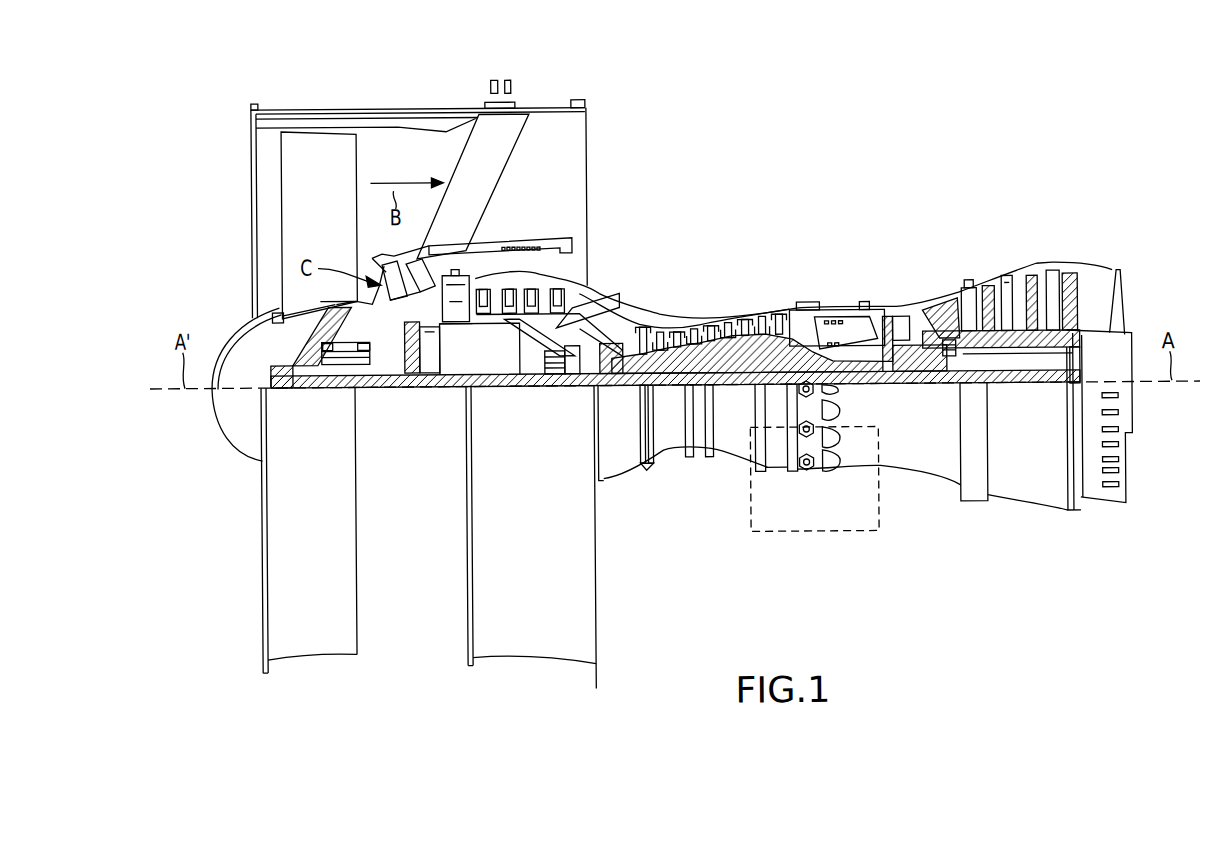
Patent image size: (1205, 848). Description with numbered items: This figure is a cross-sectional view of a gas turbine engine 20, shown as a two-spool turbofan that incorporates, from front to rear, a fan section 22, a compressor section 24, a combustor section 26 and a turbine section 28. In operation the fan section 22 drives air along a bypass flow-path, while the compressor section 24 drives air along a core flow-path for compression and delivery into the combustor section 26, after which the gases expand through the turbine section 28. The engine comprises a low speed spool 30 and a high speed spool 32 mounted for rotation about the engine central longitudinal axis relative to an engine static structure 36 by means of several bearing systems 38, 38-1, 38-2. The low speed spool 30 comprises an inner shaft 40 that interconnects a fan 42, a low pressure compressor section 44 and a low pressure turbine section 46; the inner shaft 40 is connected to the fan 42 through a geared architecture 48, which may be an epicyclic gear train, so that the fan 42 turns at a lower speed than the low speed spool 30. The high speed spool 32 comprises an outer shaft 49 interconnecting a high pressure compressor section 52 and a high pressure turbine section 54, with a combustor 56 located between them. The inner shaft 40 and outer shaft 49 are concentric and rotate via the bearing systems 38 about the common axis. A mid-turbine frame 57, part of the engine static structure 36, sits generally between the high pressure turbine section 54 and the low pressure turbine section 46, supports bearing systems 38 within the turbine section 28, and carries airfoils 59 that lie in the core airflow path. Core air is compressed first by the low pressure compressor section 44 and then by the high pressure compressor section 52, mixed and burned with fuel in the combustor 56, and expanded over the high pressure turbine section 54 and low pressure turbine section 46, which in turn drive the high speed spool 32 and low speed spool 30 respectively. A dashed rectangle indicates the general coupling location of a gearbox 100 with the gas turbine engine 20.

The gas turbine engine 20 is at (880, 132).
The fan section 22 is at (458, 87).
The compressor section 24 is at (470, 209).
The combustor section 26 is at (887, 209).
The turbine section 28 is at (1070, 210).
The low speed spool 30 is at (740, 402).
The high speed spool 32 is at (772, 355).
The engine static structure 36 is at (752, 456).
The bearing system 38 is at (935, 386).
The bearing system 38-1 is at (325, 365).
The bearing system 38-2 is at (553, 386).
The inner shaft 40 is at (613, 393).
The fan 42 is at (329, 221).
The low pressure compressor section 44 is at (530, 292).
The low pressure turbine section 46 is at (1013, 285).
The geared architecture 48 is at (433, 405).
The outer shaft 49 is at (840, 374).
The high pressure compressor section 52 is at (720, 352).
The high pressure turbine section 54 is at (902, 312).
The combustor 56 is at (837, 331).
The mid-turbine frame 57 is at (937, 325).
The airfoils 59 is at (960, 298).
The gearbox 100 is at (838, 534).